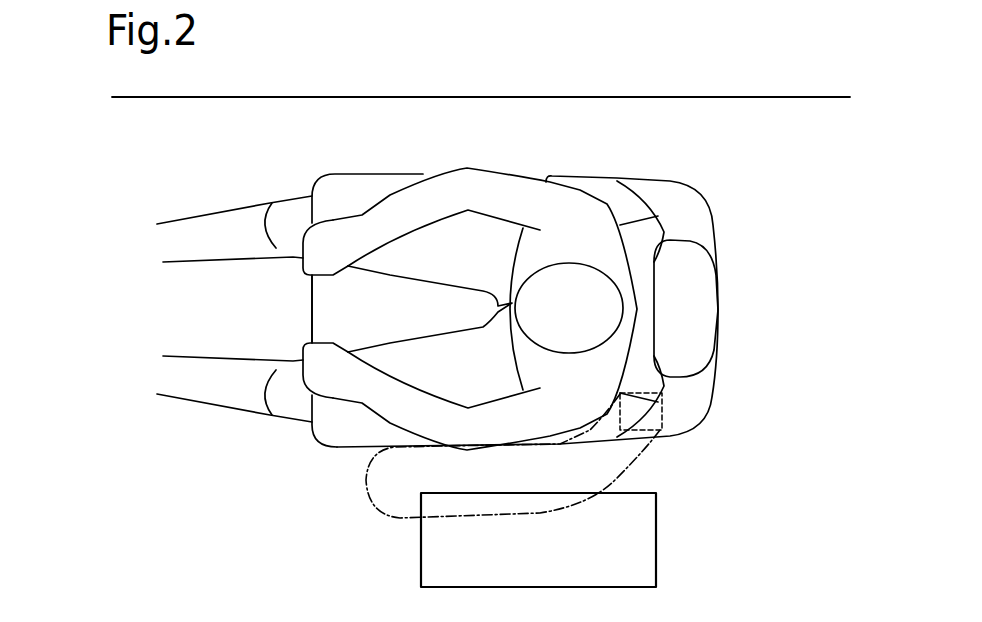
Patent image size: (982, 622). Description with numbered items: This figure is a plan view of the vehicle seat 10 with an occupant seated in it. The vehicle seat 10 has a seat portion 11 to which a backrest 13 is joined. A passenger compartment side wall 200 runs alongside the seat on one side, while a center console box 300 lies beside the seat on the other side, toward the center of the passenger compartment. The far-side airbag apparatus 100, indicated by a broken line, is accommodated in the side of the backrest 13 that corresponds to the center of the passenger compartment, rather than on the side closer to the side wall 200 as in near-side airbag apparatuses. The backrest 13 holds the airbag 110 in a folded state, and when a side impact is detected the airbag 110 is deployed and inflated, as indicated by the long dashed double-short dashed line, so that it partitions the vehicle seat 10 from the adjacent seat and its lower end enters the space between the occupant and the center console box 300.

The vehicle seat 10 is at (722, 191).
The seat portion 11 is at (309, 305).
The backrest 13 is at (708, 225).
The far-side airbag apparatus 100 is at (663, 400).
The airbag 110 is at (366, 490).
The passenger compartment side wall 200 is at (318, 100).
The center console box 300 is at (657, 537).